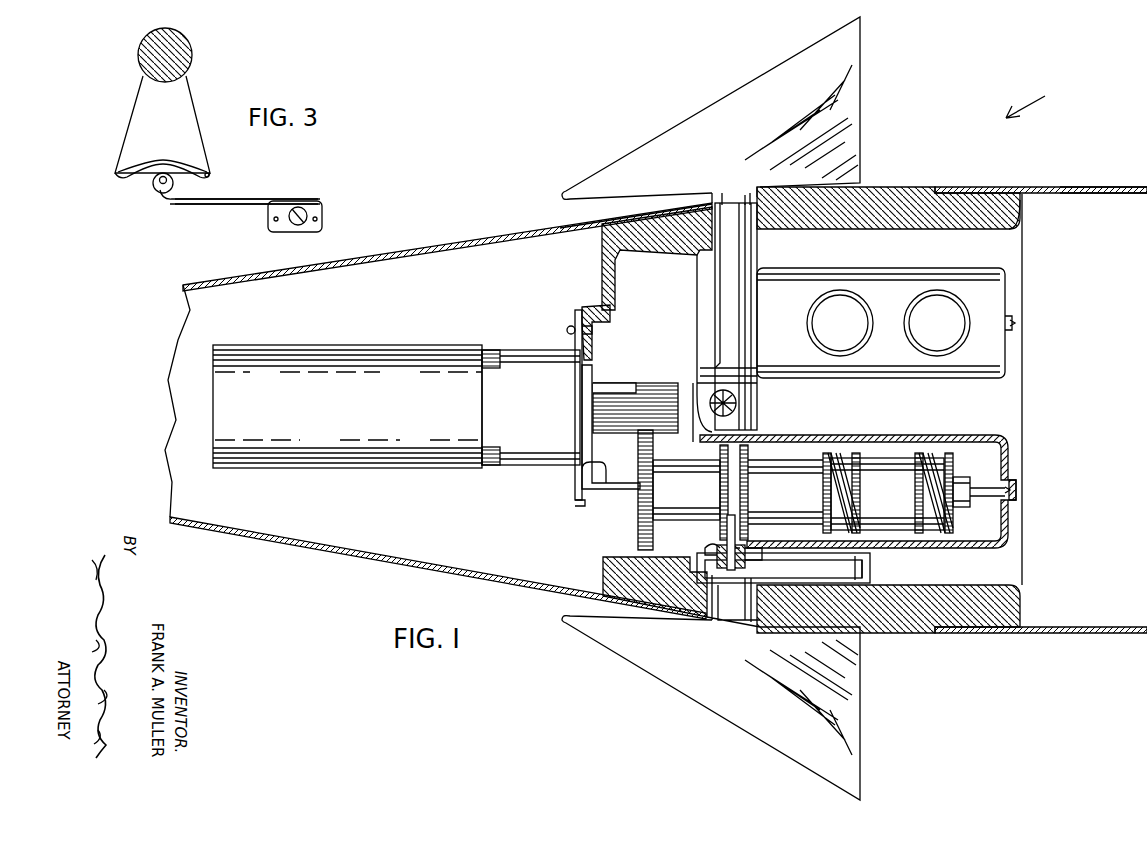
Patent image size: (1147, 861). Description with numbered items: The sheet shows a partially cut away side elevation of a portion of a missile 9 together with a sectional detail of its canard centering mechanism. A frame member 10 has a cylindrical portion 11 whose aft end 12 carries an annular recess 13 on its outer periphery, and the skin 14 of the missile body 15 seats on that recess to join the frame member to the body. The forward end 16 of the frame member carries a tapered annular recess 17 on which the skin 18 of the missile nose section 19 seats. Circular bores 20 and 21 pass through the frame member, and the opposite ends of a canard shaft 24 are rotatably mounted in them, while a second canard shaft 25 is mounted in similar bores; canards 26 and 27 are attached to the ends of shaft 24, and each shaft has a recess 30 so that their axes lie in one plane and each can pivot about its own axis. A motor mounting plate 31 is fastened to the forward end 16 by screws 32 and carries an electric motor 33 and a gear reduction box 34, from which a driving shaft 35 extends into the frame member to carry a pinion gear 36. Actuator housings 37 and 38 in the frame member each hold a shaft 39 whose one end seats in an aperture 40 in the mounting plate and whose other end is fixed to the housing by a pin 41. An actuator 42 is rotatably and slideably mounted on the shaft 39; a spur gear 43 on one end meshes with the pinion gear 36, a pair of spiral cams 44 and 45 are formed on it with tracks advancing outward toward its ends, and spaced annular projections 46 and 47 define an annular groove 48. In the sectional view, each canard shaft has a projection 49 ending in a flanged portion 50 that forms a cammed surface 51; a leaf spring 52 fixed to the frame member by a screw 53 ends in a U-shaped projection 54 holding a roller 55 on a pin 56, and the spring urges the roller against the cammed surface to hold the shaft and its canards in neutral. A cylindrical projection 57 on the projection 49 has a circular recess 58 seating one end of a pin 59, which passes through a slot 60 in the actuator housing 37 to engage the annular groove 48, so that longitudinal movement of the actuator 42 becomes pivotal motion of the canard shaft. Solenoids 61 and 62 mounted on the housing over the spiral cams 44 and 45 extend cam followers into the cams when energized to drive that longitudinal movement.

In FIG. 1, the missile 9 is at (1034, 101).
In FIG. 1, the frame member 10 is at (1026, 392).
In FIG. 1, the cylindrical portion 11 is at (876, 188).
In FIG. 1, the aft end 12 is at (1023, 214).
In FIG. 1, the recess 13 is at (994, 187).
In FIG. 1, the skin 14 is at (1094, 187).
In FIG. 1, the missile body 15 is at (1092, 634).
In FIG. 1, the forward end 16 is at (602, 245).
In FIG. 1, the tapered annular recess 17 is at (578, 210).
In FIG. 1, the skin 18 is at (400, 235).
In FIG. 1, the missile nose section 19 is at (386, 566).
In FIG. 1, the circular bore 20 is at (736, 612).
In FIG. 1, the circular bore 21 is at (735, 205).
In FIG. 3, the canard shaft 24 is at (190, 42).
In FIG. 1, the canard shaft 24 is at (728, 296).
In FIG. 1, the canard shaft 25 is at (733, 396).
In FIG. 1, the canard 26 is at (856, 690).
In FIG. 1, the canard 27 is at (846, 112).
In FIG. 1, the recess 30 is at (742, 372).
In FIG. 1, the motor mounting plate 31 is at (577, 312).
In FIG. 1, the screws 32 is at (567, 330).
In FIG. 1, the electric motor 33 is at (347, 406).
In FIG. 1, the gear reduction box 34 is at (531, 407).
In FIG. 1, the driving shaft 35 is at (595, 434).
In FIG. 1, the pinion gear 36 is at (612, 385).
In FIG. 1, the actuator housing 37 is at (945, 440).
In FIG. 1, the actuator housing 38 is at (881, 323).
In FIG. 1, the shaft 39 is at (985, 500).
In FIG. 1, the aperture 40 is at (574, 506).
In FIG. 1, the pin 41 is at (1016, 325).
In FIG. 1, the actuator 42 is at (846, 494).
In FIG. 1, the spur gear 43 is at (637, 527).
In FIG. 1, the spiral cam 44 is at (830, 514).
In FIG. 1, the spiral cam 45 is at (940, 472).
In FIG. 1, the annular projection 46 is at (720, 453).
In FIG. 1, the annular projection 47 is at (748, 456).
In FIG. 1, the annular groove 48 is at (730, 463).
In FIG. 3, the projection 49 is at (187, 82).
In FIG. 1, the projection 49 is at (770, 570).
In FIG. 3, the flanged portion 50 is at (212, 176).
In FIG. 3, the cammed surface 51 is at (118, 180).
In FIG. 3, the leaf spring 52 is at (240, 198).
In FIG. 3, the screw 53 is at (299, 207).
In FIG. 3, the U-shaped projection 54 is at (168, 202).
In FIG. 3, the roller 55 is at (153, 187).
In FIG. 3, the pin 56 is at (160, 194).
In FIG. 1, the cylindrical projection 57 is at (750, 555).
In FIG. 1, the circular recess 58 is at (717, 555).
In FIG. 1, the pin 59 is at (740, 525).
In FIG. 1, the slot 60 is at (716, 545).
In FIG. 1, the solenoid 61 is at (840, 323).
In FIG. 1, the solenoid 62 is at (937, 323).